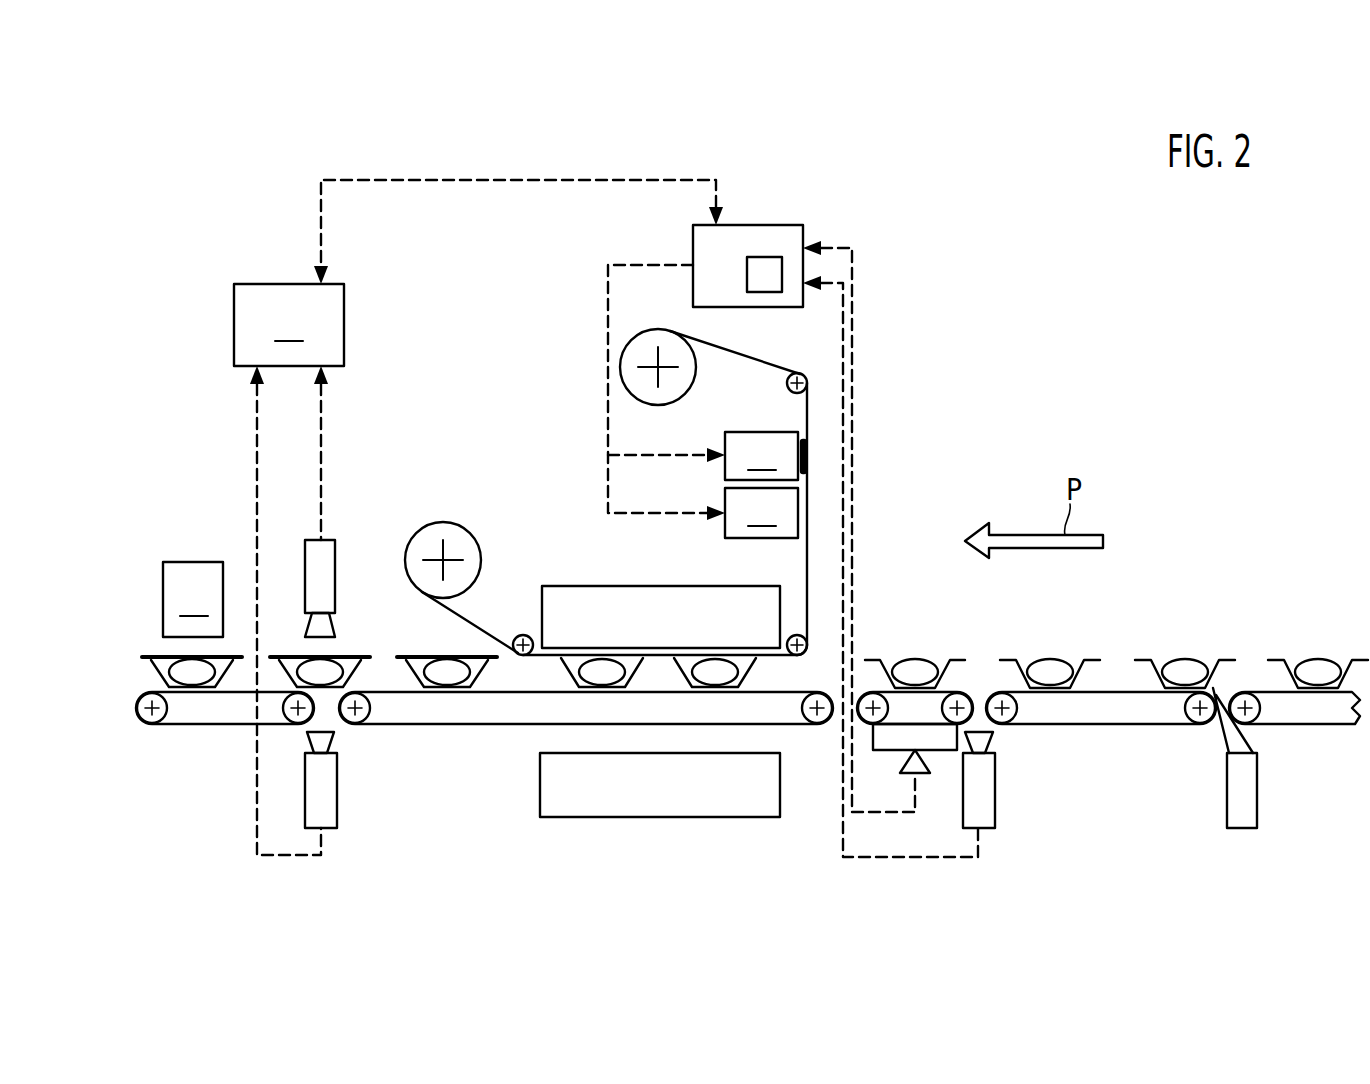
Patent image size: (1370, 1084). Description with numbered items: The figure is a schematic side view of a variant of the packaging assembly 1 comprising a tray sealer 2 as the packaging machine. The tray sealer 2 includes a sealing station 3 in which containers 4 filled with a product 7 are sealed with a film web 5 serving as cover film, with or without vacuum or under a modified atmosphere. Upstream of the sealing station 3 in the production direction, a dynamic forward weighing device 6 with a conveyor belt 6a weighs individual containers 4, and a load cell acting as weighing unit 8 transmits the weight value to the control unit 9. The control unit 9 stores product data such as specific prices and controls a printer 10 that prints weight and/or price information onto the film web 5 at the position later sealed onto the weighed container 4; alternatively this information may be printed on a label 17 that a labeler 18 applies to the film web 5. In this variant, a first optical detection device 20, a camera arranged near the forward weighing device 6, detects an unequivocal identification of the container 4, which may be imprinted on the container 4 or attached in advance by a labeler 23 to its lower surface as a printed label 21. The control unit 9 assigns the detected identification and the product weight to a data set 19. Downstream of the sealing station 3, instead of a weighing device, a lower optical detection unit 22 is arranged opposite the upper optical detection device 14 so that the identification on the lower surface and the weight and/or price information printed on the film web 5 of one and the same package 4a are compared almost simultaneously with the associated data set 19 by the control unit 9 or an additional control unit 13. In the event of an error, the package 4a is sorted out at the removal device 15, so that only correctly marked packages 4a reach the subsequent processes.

The packaging assembly 1 is at (1031, 239).
The tray sealer 2 is at (518, 432).
The sealing station 3 is at (556, 574).
The container 4 is at (892, 667).
The package 4a is at (416, 654).
The film web 5 is at (766, 371).
The forward weighing device 6 is at (942, 760).
The conveyor belt 6a is at (965, 690).
The product 7 is at (918, 668).
The weighing unit 8 is at (906, 766).
The control unit 9 is at (748, 233).
The printer 10 is at (761, 513).
The additional control unit 13 is at (478, 517).
The optical detection device 14 is at (329, 573).
The removal device 15 is at (193, 599).
The label 17 is at (808, 456).
The labeler 18 is at (761, 456).
The data set 19 is at (773, 268).
The first optical detection device 20 is at (990, 790).
The label 21 is at (1173, 694).
The lower optical detection unit 22 is at (327, 804).
The labeler 23 is at (1250, 790).